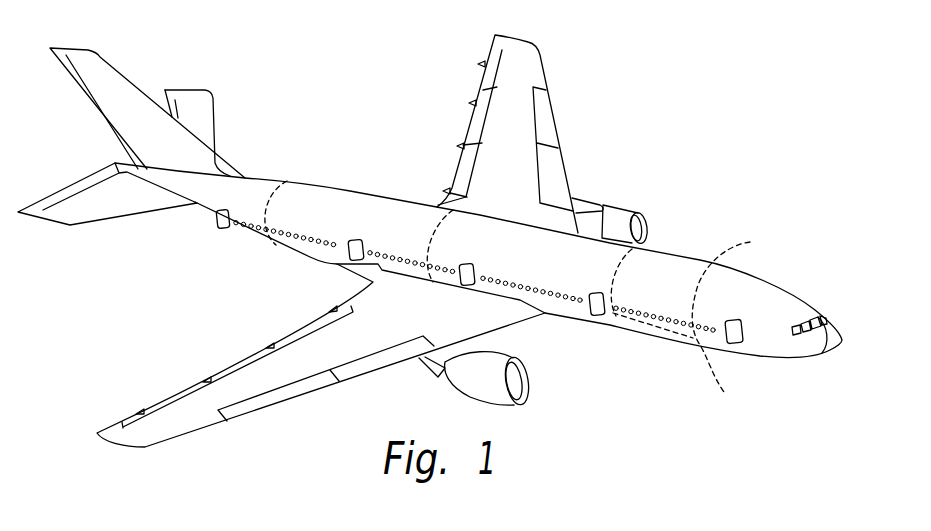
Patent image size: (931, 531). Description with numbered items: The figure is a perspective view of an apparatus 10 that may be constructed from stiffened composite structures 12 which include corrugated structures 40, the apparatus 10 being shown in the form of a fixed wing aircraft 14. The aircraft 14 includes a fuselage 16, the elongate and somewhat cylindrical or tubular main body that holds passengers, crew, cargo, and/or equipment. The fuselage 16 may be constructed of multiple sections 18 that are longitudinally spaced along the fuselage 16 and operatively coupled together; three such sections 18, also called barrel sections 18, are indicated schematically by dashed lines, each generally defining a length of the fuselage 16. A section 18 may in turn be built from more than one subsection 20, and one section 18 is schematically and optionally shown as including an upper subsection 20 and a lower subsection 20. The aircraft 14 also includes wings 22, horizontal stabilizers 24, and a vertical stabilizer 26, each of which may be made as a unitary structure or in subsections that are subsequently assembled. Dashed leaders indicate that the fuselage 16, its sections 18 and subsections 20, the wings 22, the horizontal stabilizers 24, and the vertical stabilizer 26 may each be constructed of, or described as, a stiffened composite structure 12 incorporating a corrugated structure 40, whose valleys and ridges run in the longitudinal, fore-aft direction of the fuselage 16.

The apparatus 10 is at (773, 162).
The stiffened composite structure 12 is at (377, 83).
The aircraft 14 is at (718, 116).
The fuselage 16 is at (604, 240).
The fuselage section 18 is at (298, 254).
The subsection 20 is at (733, 320).
The wing 22 is at (543, 68).
The horizontal stabilizer 24 is at (214, 126).
The vertical stabilizer 26 is at (131, 82).
The corrugated structure 40 is at (189, 106).